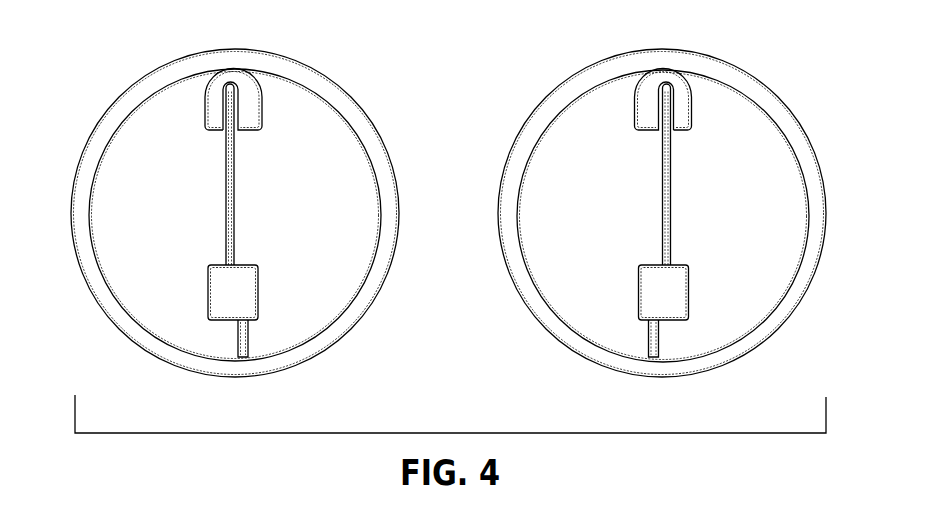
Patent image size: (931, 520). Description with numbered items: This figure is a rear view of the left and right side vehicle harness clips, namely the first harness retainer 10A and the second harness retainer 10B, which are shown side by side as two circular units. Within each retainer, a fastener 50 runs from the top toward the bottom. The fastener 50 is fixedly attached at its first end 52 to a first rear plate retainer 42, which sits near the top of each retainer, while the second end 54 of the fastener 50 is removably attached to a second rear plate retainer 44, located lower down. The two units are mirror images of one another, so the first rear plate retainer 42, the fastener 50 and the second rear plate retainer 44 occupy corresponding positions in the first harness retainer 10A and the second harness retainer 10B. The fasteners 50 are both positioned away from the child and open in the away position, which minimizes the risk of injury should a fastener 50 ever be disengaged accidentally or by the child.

The first harness retainer 10A is at (767, 335).
The second harness retainer 10B is at (100, 300).
The first rear plate retainer 42 is at (250, 135).
The second rear plate retainer 44 is at (207, 286).
The fastener 50 is at (226, 202).
The first end 52 is at (225, 132).
The second end 54 is at (232, 257).